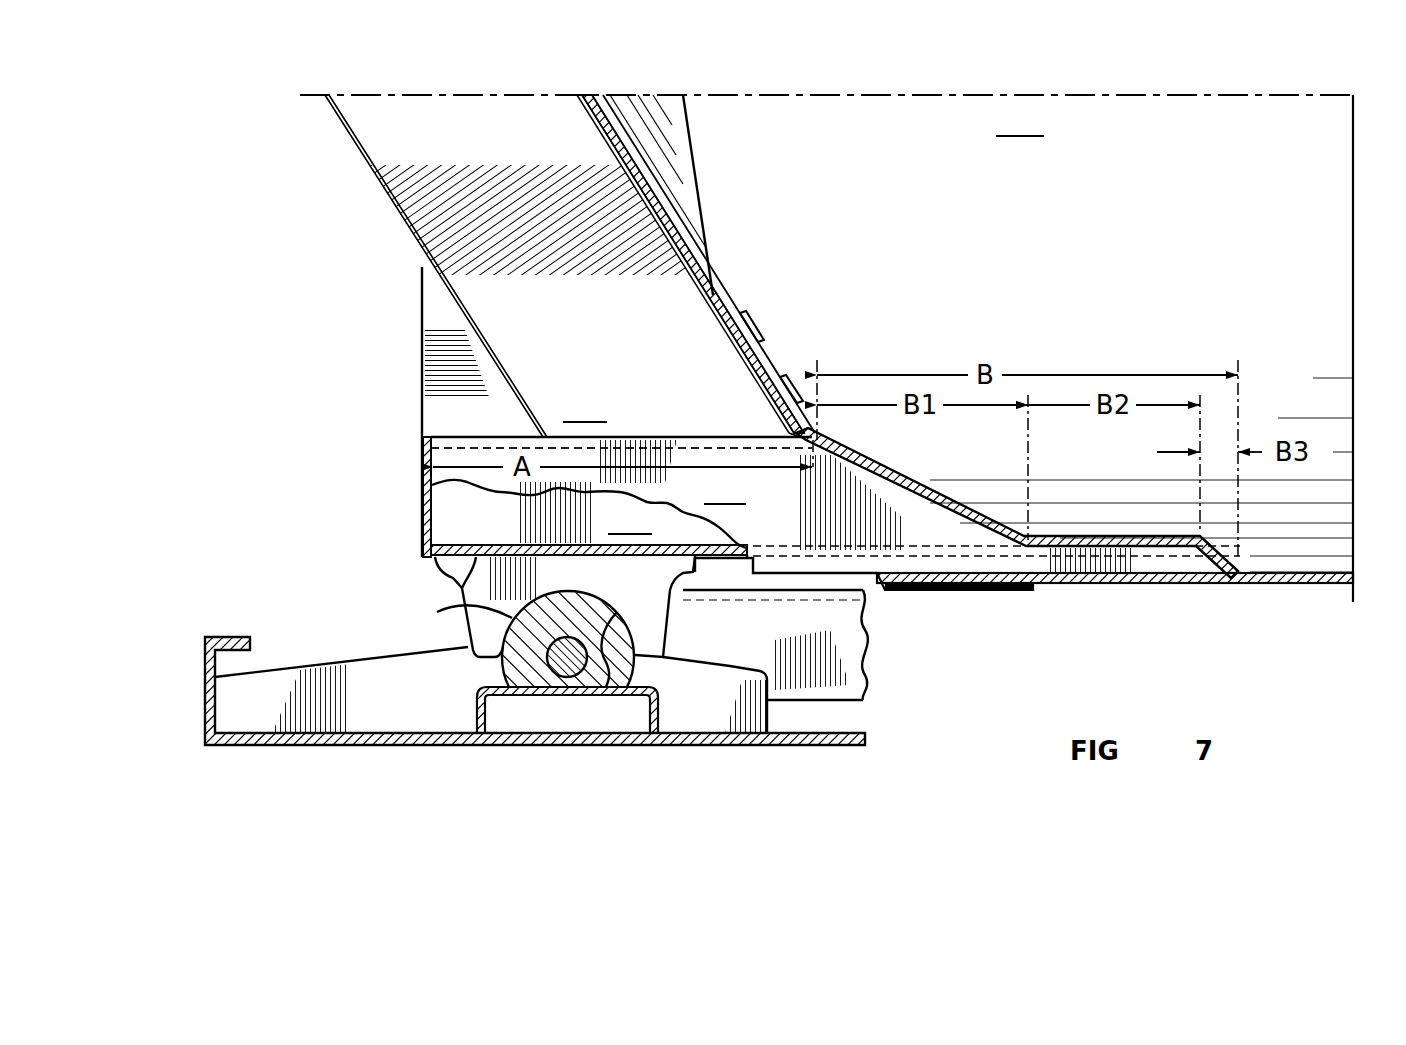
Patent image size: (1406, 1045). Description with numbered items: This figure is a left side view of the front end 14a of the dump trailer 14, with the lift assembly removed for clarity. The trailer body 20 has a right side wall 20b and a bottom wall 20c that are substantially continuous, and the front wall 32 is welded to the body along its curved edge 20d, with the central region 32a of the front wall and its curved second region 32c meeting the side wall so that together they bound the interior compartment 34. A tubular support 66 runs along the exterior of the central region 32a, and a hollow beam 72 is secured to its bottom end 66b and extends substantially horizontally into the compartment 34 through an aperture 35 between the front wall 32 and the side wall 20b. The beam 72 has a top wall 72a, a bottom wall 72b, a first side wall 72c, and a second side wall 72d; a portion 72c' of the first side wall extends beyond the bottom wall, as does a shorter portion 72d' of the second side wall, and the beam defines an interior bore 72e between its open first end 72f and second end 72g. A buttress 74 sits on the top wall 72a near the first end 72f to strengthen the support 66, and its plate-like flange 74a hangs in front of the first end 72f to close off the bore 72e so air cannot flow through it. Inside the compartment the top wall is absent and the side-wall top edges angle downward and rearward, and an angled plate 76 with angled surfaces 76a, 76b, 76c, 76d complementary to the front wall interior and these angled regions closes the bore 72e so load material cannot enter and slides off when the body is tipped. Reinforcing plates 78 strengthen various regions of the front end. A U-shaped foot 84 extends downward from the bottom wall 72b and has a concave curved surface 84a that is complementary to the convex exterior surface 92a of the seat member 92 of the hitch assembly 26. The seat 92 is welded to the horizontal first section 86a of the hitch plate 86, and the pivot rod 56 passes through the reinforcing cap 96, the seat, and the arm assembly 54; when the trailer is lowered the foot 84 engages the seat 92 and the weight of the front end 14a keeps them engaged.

The dump trailer 14 is at (1303, 605).
The front end 14a is at (292, 273).
The trailer body 20 is at (1108, 175).
The right side wall 20b is at (1020, 122).
The bottom wall 20c is at (1160, 585).
The curved edge 20d is at (692, 178).
The hitch assembly 26 is at (423, 748).
The front wall 32 is at (603, 147).
The central region 32a is at (693, 264).
The curved second region 32c is at (650, 142).
The interior compartment 34 is at (922, 140).
The aperture 35 is at (770, 450).
The arm assembly 54 is at (865, 663).
The pivot rod 56 is at (567, 665).
The support 66 is at (372, 176).
The bottom end 66b is at (576, 415).
The beam 72 is at (480, 428).
The top wall 72a is at (655, 432).
The bottom wall 72b is at (462, 580).
The first side wall 72c is at (590, 511).
The portion of first side wall 72c' is at (887, 617).
The second side wall 72d is at (589, 525).
The portion of second side wall 72d' is at (785, 599).
The interior bore 72e is at (449, 503).
The first end 72f is at (430, 455).
The second end 72g is at (1228, 563).
The buttress 74 is at (425, 323).
The flange 74a is at (422, 490).
The angled plate 76 is at (977, 505).
The angled surface 76a is at (790, 390).
The angled surface 76b is at (870, 455).
The angled surface 76c is at (1090, 535).
The angled surface 76d is at (1228, 562).
The reinforcing plates 78 is at (738, 323).
The U-shaped foot 84 is at (460, 632).
The U-shaped curved surface 84a is at (607, 677).
The hitch plate 86 is at (307, 748).
The first section 86a is at (227, 643).
The seat member 92 is at (527, 672).
The convexly shaped exterior surface 92a is at (470, 605).
The reinforcing cap 96 is at (683, 595).